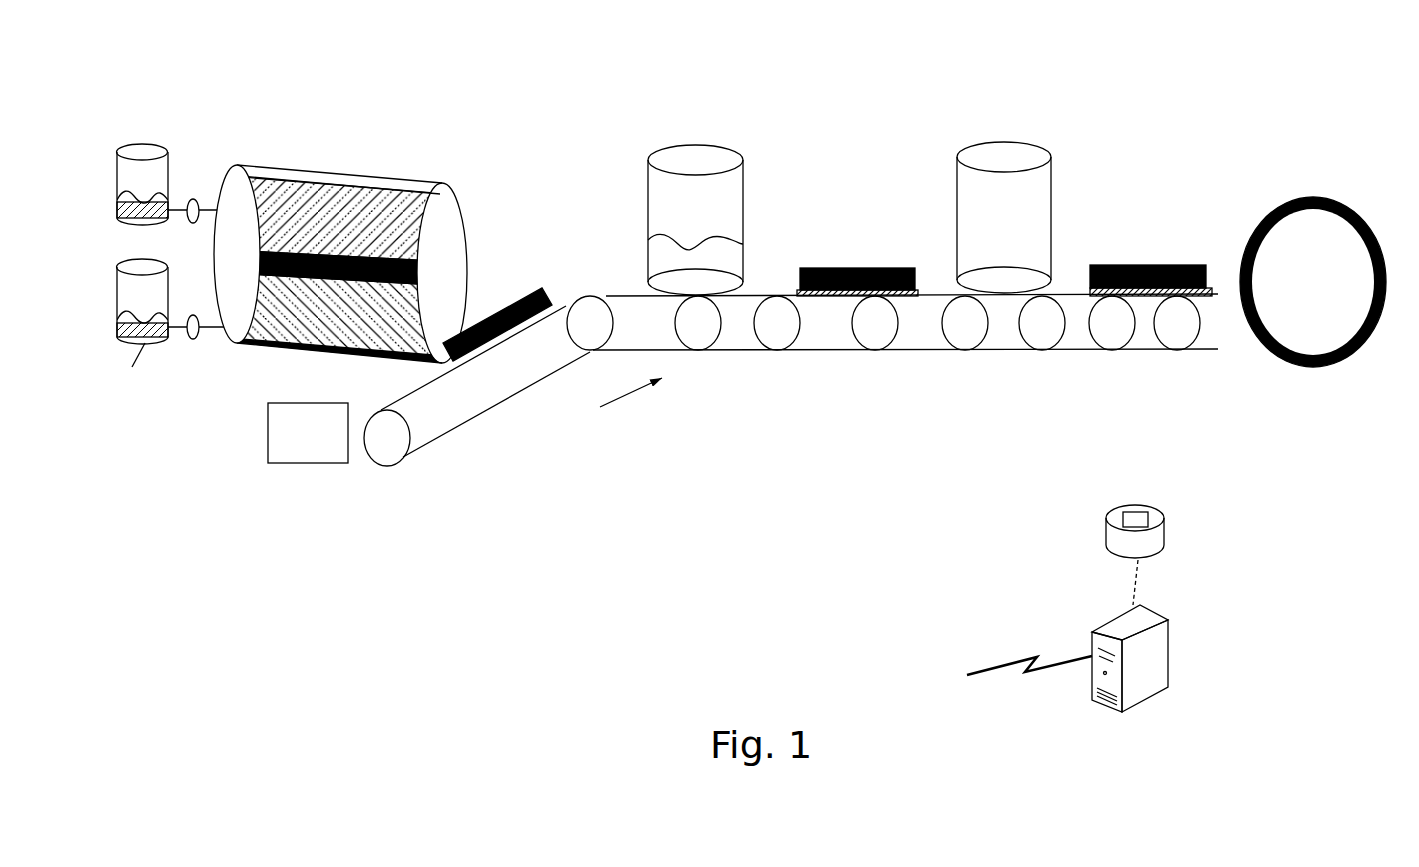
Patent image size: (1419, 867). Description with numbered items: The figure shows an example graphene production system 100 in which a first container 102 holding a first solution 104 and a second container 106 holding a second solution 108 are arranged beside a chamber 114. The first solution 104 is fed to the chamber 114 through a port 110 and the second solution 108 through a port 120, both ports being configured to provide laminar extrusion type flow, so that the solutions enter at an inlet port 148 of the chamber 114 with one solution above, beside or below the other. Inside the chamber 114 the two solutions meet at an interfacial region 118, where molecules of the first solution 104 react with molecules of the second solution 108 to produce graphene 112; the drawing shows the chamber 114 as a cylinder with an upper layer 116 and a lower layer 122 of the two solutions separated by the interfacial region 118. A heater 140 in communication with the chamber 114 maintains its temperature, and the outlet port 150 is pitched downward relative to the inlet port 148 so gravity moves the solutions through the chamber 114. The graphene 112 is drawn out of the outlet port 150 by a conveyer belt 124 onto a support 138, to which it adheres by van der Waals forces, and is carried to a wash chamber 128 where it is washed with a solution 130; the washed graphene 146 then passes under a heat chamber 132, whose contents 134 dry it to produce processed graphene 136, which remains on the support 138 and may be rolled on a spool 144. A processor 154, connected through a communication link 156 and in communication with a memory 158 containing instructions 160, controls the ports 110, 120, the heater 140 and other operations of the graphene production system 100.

The graphene production system 100 is at (1275, 61).
The first container 102 is at (140, 148).
The first solution 104 is at (118, 197).
The second container 106 is at (131, 223).
The second solution 108 is at (118, 320).
The port 110 is at (194, 200).
The graphene 112 is at (258, 272).
The chamber 114 is at (305, 170).
The first layer 116 is at (295, 198).
The interfacial region 118 is at (247, 258).
The port 120 is at (194, 318).
The second layer 122 is at (302, 325).
The conveyer belt 124 is at (530, 390).
The wash chamber 128 is at (690, 155).
The solution 130 is at (662, 242).
The heat chamber 132 is at (998, 152).
The fourth liquid 134 is at (975, 253).
The processed graphene 136 is at (1168, 265).
The support 138 is at (555, 310).
The heater 140 is at (298, 465).
The spool 144 is at (1300, 332).
The washed graphene 146 is at (858, 268).
The inlet port 148 is at (236, 258).
The outlet port 150 is at (512, 250).
The processor 154 is at (1105, 712).
The communication link 156 is at (1025, 685).
The memory 158 is at (1115, 560).
The instructions 160 is at (1122, 513).